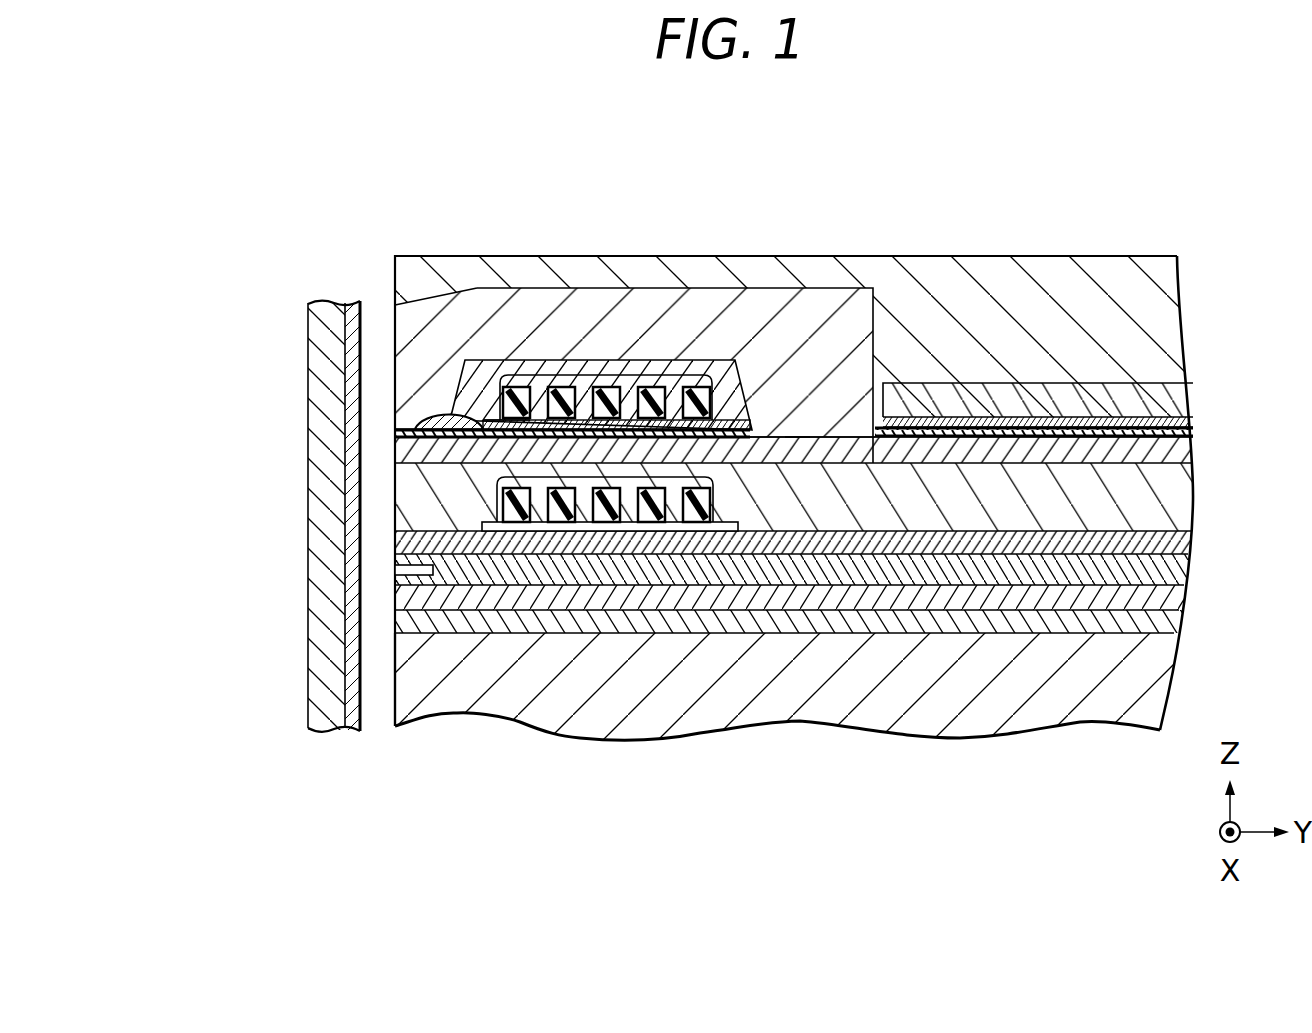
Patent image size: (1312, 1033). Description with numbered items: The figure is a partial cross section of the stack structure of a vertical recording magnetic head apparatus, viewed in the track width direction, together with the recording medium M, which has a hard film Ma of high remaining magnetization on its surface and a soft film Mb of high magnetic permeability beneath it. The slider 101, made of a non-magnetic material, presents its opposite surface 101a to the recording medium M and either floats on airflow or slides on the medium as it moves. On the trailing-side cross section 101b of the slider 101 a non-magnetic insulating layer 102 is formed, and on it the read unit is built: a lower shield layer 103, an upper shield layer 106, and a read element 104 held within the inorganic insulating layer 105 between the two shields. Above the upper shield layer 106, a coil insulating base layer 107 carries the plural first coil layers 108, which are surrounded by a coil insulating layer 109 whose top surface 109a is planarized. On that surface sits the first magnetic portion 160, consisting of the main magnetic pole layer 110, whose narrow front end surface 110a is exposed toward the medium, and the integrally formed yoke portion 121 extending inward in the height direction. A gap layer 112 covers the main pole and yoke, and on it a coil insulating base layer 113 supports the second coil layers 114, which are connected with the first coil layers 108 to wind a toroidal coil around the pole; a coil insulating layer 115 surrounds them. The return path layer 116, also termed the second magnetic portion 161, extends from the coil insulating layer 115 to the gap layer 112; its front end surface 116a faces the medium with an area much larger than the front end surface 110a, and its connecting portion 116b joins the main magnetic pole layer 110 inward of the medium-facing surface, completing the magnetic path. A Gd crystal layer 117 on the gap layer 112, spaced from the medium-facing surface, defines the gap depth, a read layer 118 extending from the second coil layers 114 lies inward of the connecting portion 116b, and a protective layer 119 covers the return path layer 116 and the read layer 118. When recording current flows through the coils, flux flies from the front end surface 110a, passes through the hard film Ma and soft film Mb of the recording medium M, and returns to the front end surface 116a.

The slider 101 is at (1025, 720).
The opposite surface 101a is at (395, 692).
The trailing-side cross section 101b is at (632, 633).
The non-magnetic insulating layer 102 is at (396, 622).
The lower shield layer 103 is at (396, 596).
The read element 104 is at (396, 570).
The inorganic insulating layer 105 is at (978, 575).
The upper shield layer 106 is at (396, 548).
The coil insulating base layer 107 is at (716, 531).
The first coil layers 108 is at (398, 466).
The coil insulating layer 109 is at (398, 503).
The top surface 109a is at (828, 463).
The main magnetic pole layer 110 is at (398, 438).
The front end surface 110a is at (398, 433).
The gap layer 112 is at (952, 453).
The coil insulating base layer 113 is at (740, 425).
The second coil layers 114 is at (600, 375).
The coil insulating layer 115 is at (500, 420).
The return path layer 116 is at (678, 262).
The front end surface 116a is at (395, 318).
The connecting portion 116b is at (800, 320).
The Gd crystal layer 117 is at (449, 411).
The read layer 118 is at (1022, 402).
The protective layer 119 is at (540, 270).
The yoke portion 121 is at (797, 443).
The first magnetic portion 160 is at (888, 478).
The second magnetic portion 161 is at (648, 282).
The recording medium M is at (287, 542).
The hard film Ma is at (313, 688).
The soft film Mb is at (352, 697).